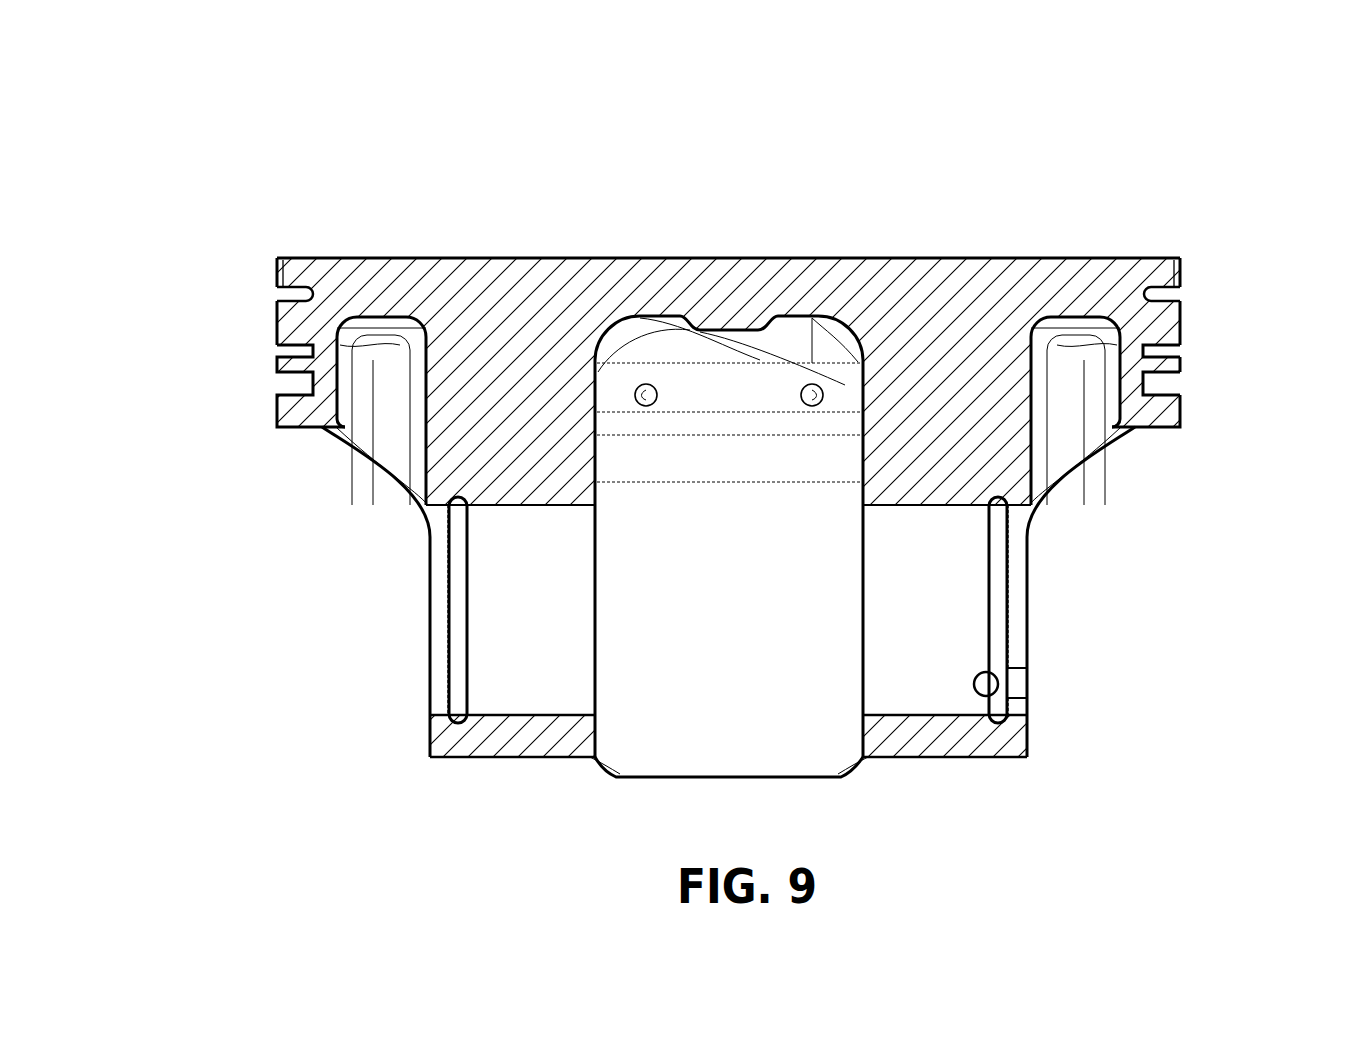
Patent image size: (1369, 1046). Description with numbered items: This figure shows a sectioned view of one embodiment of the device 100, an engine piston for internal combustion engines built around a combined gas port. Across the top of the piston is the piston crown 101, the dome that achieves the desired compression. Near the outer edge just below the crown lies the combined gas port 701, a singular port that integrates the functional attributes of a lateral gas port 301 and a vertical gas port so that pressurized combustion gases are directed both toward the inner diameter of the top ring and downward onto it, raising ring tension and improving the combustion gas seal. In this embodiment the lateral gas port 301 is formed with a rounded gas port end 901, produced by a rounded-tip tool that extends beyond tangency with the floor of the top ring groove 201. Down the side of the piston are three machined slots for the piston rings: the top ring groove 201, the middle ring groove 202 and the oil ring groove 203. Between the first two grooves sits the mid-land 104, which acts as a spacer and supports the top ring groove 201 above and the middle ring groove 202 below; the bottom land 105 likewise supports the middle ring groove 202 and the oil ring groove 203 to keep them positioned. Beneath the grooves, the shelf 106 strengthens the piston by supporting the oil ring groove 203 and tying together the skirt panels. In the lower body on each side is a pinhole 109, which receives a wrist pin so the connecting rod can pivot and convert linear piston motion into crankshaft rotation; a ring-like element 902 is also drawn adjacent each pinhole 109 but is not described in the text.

The device 100 is at (918, 330).
The piston crown 101 is at (659, 255).
The combined gas port 701 is at (272, 276).
The lateral gas port 301 is at (303, 281).
The rounded gas port end 901 is at (327, 281).
The mid-land 104 is at (272, 320).
The bottom land 105 is at (272, 365).
The top ring groove 201 is at (1166, 302).
The middle ring groove 202 is at (1166, 352).
The oil ring groove 203 is at (1166, 384).
The shelf 106 is at (1185, 412).
The pinhole 109 is at (508, 603).
The skirt ring 902 is at (456, 561).